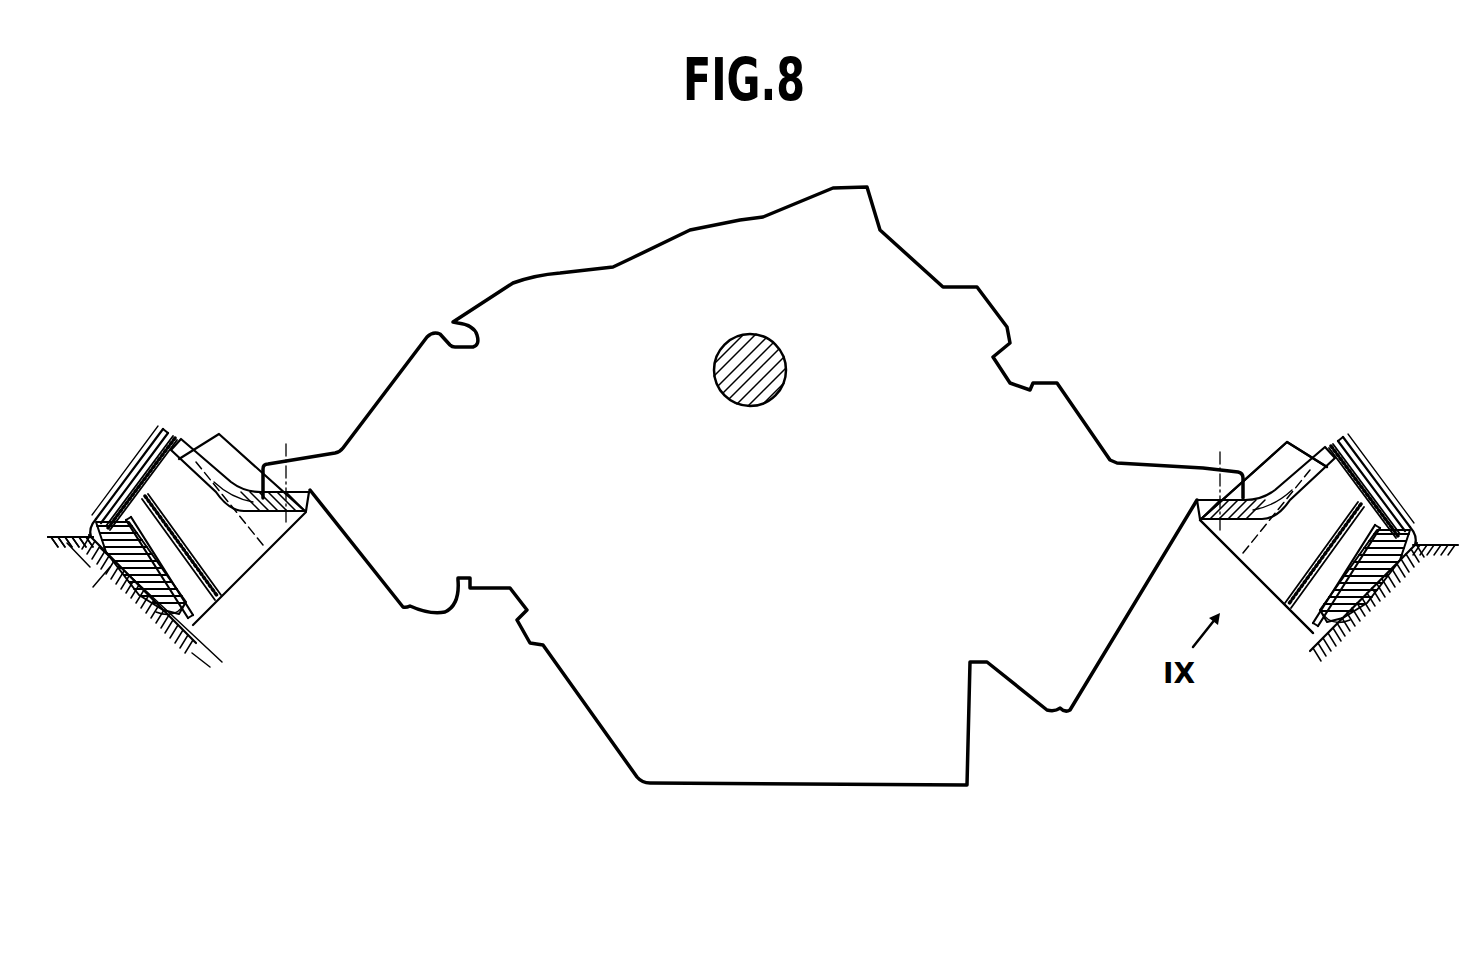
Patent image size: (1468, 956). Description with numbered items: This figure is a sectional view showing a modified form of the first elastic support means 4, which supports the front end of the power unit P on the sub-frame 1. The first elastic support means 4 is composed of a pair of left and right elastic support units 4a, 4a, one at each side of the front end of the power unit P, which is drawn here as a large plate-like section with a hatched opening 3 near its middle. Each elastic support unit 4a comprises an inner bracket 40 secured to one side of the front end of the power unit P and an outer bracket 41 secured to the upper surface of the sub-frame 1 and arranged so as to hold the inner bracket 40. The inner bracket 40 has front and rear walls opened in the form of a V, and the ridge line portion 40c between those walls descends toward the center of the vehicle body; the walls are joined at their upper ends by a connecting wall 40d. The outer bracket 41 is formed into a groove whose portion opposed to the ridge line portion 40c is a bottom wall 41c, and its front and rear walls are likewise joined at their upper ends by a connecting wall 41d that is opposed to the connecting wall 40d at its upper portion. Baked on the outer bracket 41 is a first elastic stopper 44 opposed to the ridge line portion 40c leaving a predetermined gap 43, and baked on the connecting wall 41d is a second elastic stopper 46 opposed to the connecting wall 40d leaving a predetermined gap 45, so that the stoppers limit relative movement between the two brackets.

The power unit P is at (907, 263).
The sub-frame 1 is at (1440, 547).
The opening 3 is at (778, 378).
The first elastic support means 4 is at (1253, 427).
The elastic support unit 4a is at (1384, 467).
The inner bracket 40 is at (1245, 497).
The ridge line portion 40c is at (1288, 590).
The connecting wall 40d is at (1308, 549).
The outer bracket 41 is at (1343, 457).
The bottom wall 41c is at (1368, 590).
The connecting wall 41d is at (1377, 485).
The gap 43 is at (1303, 617).
The first elastic stopper 44 is at (1367, 603).
The gap 45 is at (1378, 505).
The second elastic stopper 46 is at (1347, 470).